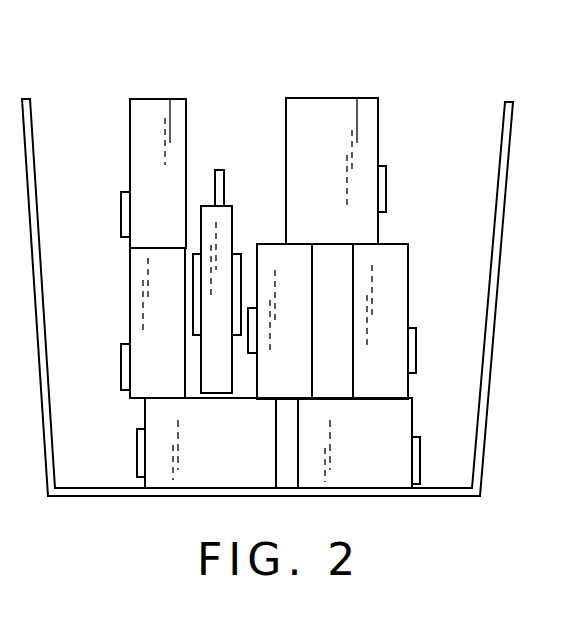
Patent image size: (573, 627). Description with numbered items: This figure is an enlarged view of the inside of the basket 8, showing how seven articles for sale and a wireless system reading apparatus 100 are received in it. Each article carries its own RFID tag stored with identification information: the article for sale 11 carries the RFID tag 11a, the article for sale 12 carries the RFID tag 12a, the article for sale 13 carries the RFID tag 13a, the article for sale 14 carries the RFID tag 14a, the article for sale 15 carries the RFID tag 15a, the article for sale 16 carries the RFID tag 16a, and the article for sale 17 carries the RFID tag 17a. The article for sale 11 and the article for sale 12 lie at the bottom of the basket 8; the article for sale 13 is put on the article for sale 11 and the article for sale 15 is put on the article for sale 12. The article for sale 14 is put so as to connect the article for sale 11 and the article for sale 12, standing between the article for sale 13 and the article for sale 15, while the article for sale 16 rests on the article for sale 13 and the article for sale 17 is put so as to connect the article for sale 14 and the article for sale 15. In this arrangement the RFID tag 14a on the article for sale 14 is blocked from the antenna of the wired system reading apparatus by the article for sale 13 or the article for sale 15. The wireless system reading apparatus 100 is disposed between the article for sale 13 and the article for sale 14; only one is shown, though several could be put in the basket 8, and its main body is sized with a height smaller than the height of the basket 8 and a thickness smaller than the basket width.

The basket 8 is at (500, 130).
The wireless system reading apparatus 100 is at (214, 150).
The article for sale 11 is at (143, 415).
The RFID tag 11a is at (137, 450).
The article for sale 12 is at (412, 412).
The RFID tag 12a is at (420, 458).
The article for sale 13 is at (128, 280).
The RFID tag 13a is at (121, 367).
The article for sale 14 is at (277, 243).
The RFID tag 14a is at (250, 308).
The article for sale 15 is at (396, 243).
The RFID tag 15a is at (416, 345).
The article for sale 16 is at (156, 98).
The RFID tag 16a is at (126, 192).
The article for sale 17 is at (326, 98).
The RFID tag 17a is at (384, 166).